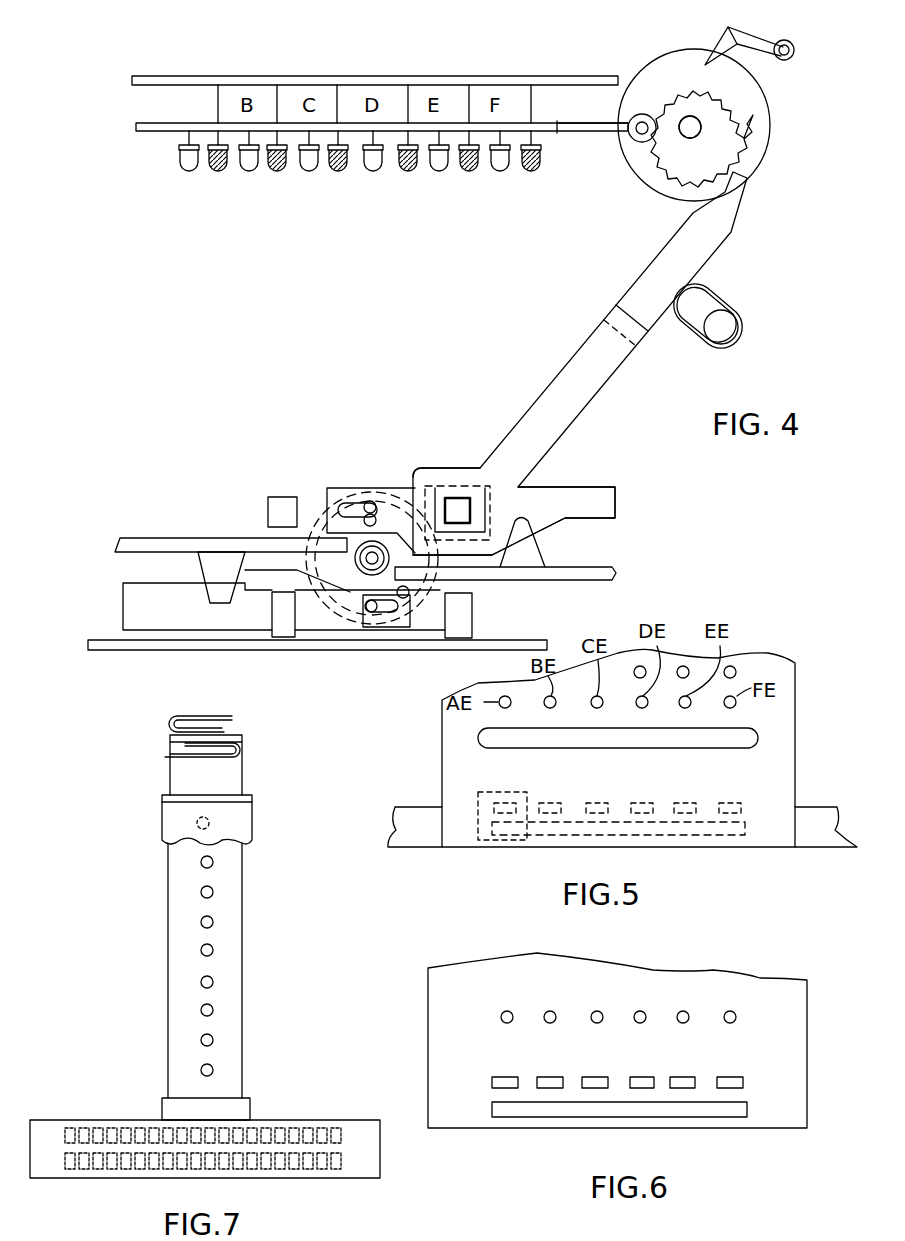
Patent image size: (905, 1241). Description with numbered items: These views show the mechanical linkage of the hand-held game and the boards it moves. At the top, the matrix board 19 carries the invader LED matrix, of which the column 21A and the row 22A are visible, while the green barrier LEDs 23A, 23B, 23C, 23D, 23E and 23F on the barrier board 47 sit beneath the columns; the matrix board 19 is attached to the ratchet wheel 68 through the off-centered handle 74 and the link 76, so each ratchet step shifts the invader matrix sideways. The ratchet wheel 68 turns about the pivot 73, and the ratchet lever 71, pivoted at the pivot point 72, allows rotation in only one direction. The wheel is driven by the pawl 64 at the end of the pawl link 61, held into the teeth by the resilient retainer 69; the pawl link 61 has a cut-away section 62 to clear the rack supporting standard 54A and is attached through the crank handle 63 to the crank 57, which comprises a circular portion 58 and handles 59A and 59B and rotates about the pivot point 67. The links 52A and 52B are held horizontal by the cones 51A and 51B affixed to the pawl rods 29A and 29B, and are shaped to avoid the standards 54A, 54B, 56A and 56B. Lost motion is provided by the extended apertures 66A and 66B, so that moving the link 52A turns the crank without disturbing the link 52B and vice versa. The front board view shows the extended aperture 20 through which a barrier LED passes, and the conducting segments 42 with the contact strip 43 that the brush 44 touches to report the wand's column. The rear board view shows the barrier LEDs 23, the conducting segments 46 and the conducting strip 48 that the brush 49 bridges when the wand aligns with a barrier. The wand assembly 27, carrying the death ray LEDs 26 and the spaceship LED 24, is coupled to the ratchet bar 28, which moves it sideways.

In FIG. 4, the barrier board 47 is at (248, 76).
In FIG. 6, the barrier board 47 is at (800, 1069).
In FIG. 4, the column of LEDs 21A is at (382, 113).
In FIG. 4, the link 76 is at (595, 133).
In FIG. 4, the matrix board 19 is at (140, 127).
In FIG. 5, the matrix board 19 is at (795, 771).
In FIG. 4, the row of LEDs 22A is at (158, 155).
In FIG. 4, the barrier LED 23A is at (218, 172).
In FIG. 4, the barrier LED 23B is at (277, 172).
In FIG. 4, the barrier LED 23C is at (338, 172).
In FIG. 4, the barrier LED 23D is at (408, 172).
In FIG. 4, the barrier LED 23E is at (469, 172).
In FIG. 4, the barrier LED 23F is at (531, 172).
In FIG. 4, the ratchet wheel 68 is at (730, 146).
In FIG. 4, the off-centered handle 74 is at (640, 114).
In FIG. 4, the pivot 73 is at (690, 134).
In FIG. 4, the ratchet lever 71 is at (752, 32).
In FIG. 4, the pivot point 72 is at (794, 50).
In FIG. 4, the pawl 64 is at (735, 187).
In FIG. 4, the pawl link 61 is at (568, 363).
In FIG. 4, the resilient retainer 69 is at (735, 330).
In FIG. 4, the cut-away section 62 is at (494, 470).
In FIG. 4, the link 52A is at (565, 490).
In FIG. 4, the rack supporting standard 54A is at (457, 497).
In FIG. 4, the crank 57 is at (386, 474).
In FIG. 4, the crank handle 59A is at (368, 501).
In FIG. 4, the extended aperture 66A is at (347, 502).
In FIG. 4, the rack supporting standard 54B is at (281, 497).
In FIG. 4, the pawl rod 29B is at (160, 538).
In FIG. 4, the pivot point 67 is at (355, 545).
In FIG. 4, the circular portion 58 is at (338, 568).
In FIG. 4, the cone 51B is at (207, 568).
In FIG. 4, the link 52B is at (180, 617).
In FIG. 4, the standard 56B is at (283, 625).
In FIG. 4, the extended aperture 66B is at (397, 617).
In FIG. 4, the crank handle 59B is at (373, 617).
In FIG. 4, the crank handle 63 is at (410, 597).
In FIG. 4, the pawl rod 29A is at (578, 581).
In FIG. 4, the cone 51A is at (532, 558).
In FIG. 4, the standard 56A is at (460, 614).
In FIG. 5, the extended aperture 20 is at (758, 737).
In FIG. 5, the conducting segments 42 is at (760, 805).
In FIG. 5, the contact strip 43 is at (700, 832).
In FIG. 6, the barrier LEDs 23 is at (757, 1014).
In FIG. 6, the conducting segments 46 is at (483, 1067).
In FIG. 6, the conducting strip 48 is at (555, 1112).
In FIG. 7, the wand assembly 27 is at (272, 903).
In FIG. 7, the death ray LEDs 26 is at (182, 1026).
In FIG. 7, the spaceship LED 24 is at (214, 1070).
In FIG. 7, the brush 49 is at (212, 716).
In FIG. 7, the brush 44 is at (185, 757).
In FIG. 7, the ratchet bar 28 is at (365, 1135).